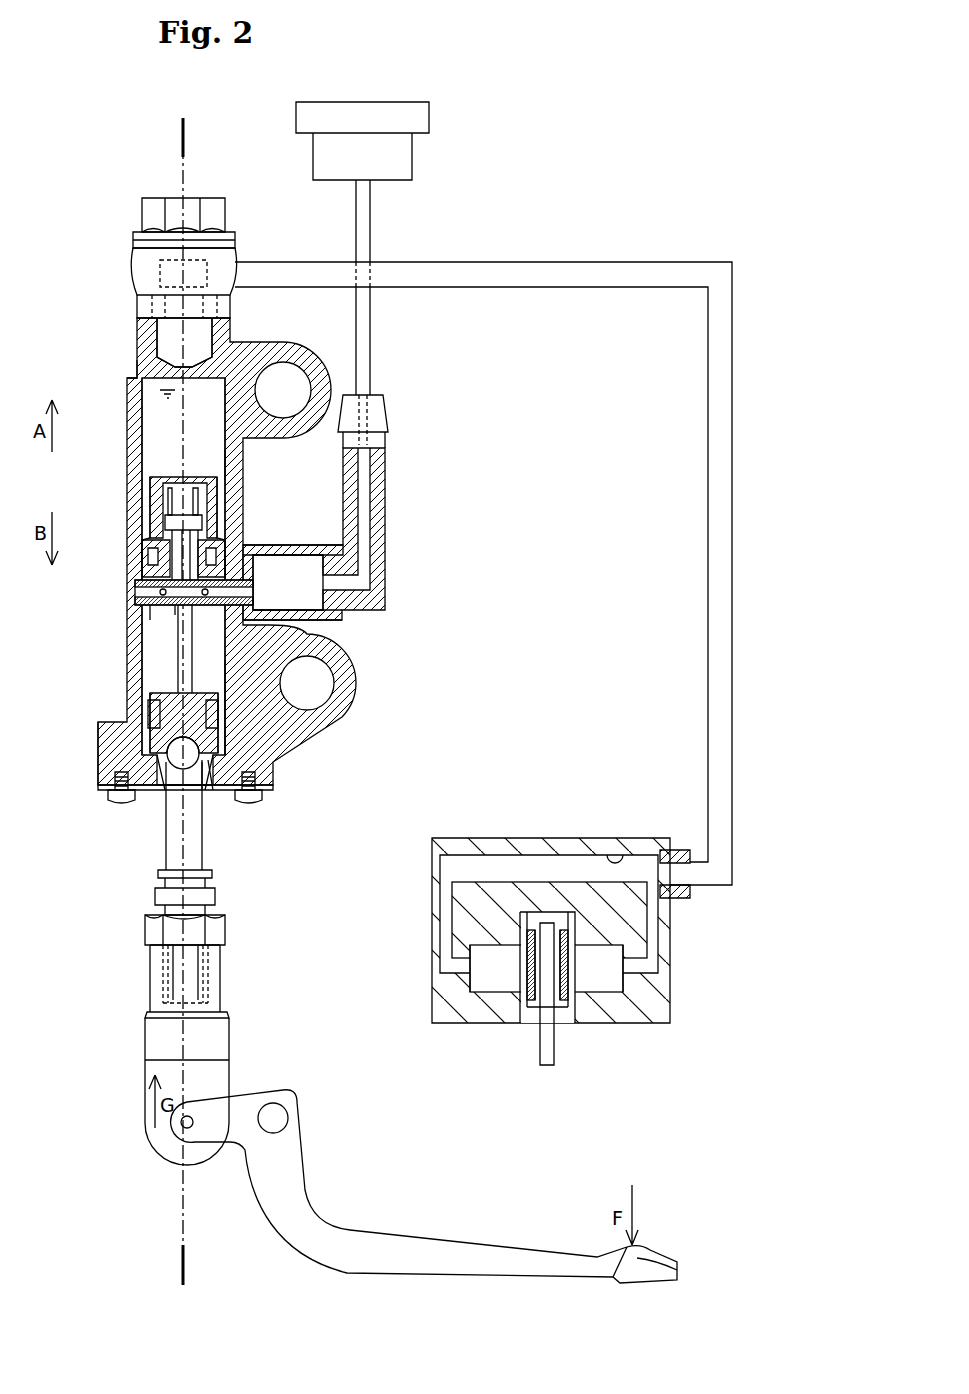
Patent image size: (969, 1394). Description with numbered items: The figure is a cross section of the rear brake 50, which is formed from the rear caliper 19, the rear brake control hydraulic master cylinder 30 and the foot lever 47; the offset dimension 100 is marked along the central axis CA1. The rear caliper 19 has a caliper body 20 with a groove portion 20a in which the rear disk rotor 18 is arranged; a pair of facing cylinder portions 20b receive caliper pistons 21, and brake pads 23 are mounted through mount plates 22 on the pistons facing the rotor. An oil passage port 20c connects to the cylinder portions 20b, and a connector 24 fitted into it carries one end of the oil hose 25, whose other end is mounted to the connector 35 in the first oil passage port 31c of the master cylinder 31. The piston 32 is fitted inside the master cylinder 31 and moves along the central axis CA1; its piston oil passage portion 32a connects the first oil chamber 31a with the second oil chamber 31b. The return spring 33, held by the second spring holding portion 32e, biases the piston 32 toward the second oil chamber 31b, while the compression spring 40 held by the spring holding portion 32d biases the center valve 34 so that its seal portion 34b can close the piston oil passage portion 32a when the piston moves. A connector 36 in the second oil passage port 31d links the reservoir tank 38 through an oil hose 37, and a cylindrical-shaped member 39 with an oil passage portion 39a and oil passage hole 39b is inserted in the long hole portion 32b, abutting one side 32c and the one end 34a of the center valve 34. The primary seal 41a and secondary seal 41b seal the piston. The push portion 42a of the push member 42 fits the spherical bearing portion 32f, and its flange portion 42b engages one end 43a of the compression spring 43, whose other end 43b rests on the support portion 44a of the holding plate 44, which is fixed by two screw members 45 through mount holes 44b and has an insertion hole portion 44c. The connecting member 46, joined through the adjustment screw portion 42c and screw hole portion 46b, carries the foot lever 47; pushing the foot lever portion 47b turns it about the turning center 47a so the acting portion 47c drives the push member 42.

The central axis CA1 is at (183, 190).
The offset dimension 100 is at (237, 137).
The rear disk rotor 18 is at (547, 1069).
The rear caliper 19 is at (630, 801).
The caliper body 20 is at (670, 1013).
The groove portion 20a is at (575, 912).
The cylinder portions 20b is at (488, 996).
The oil passage port 20c is at (615, 855).
The caliper pistons 21 is at (475, 970).
The mount plates 22 is at (521, 1003).
The brake pads 23 is at (530, 1003).
The connector 24 is at (690, 893).
The oil hose 25 is at (732, 432).
The rear brake control hydraulic master cylinder 30 is at (110, 227).
The master cylinder 31 is at (130, 412).
The first oil chamber 31a is at (150, 444).
The second oil chamber 31b is at (150, 624).
The first oil passage port 31c is at (160, 346).
The second oil passage port 31d is at (320, 625).
The piston 32 is at (140, 577).
The piston oil passage portion 32a is at (145, 555).
The long hole portion 32b is at (234, 692).
The one side of long hole portion 32c is at (260, 552).
The spring holding portion 32d is at (230, 472).
The second spring holding portion 32e is at (230, 565).
The bearing portion 32f is at (203, 702).
The return spring 33 is at (133, 382).
The center valve 34 is at (163, 482).
The one end of center valve 34a is at (196, 611).
The seal portion 34b is at (165, 523).
The connector 35 is at (140, 274).
The connector 36 is at (385, 554).
The oil hose 37 is at (365, 317).
The reservoir tank 38 is at (425, 120).
The cylindrical-shaped member 39 is at (140, 593).
The oil passage portion 39a is at (158, 614).
The oil passage hole 39b is at (173, 614).
The compression spring 40 is at (185, 515).
The primary seal 41a is at (247, 553).
The secondary seal 41b is at (220, 724).
The push member 42 is at (170, 847).
The push portion 42a is at (152, 738).
The flange portion 42b is at (165, 700).
The adjustment screw portion 42c is at (210, 979).
The compression spring 43 is at (122, 768).
The one end of compression spring 43a is at (203, 788).
The other end of compression spring 43b is at (214, 786).
The holding plate 44 is at (270, 792).
The support portion 44a is at (140, 793).
The mount holes 44b is at (112, 798).
The insertion hole portion 44c is at (158, 793).
The screw members 45 is at (114, 789).
The connecting member 46 is at (220, 1048).
The screw hole portion 46b is at (163, 988).
The foot lever 47 is at (355, 1252).
The turning center 47a is at (277, 1118).
The foot lever portion 47b is at (644, 1251).
The acting portion 47c is at (190, 1130).
The rear brake 50 is at (546, 185).